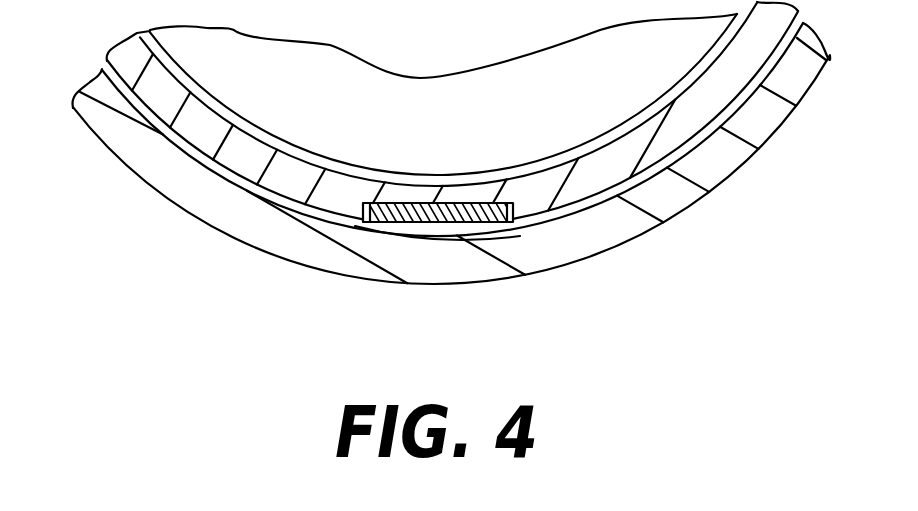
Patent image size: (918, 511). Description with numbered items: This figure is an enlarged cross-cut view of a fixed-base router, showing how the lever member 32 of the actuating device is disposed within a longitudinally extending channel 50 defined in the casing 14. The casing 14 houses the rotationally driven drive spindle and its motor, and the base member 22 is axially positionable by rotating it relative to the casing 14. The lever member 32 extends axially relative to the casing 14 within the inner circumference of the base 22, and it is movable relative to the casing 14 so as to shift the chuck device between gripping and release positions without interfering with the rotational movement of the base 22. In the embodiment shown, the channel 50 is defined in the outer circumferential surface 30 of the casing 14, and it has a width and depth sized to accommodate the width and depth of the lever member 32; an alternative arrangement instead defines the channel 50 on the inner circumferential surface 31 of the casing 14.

The casing 14 is at (607, 162).
The base member 22 is at (627, 227).
The outer circumferential surface 30 is at (281, 187).
The inner circumferential surface 31 is at (226, 109).
The lever member 32 is at (456, 222).
The channel 50 is at (396, 226).